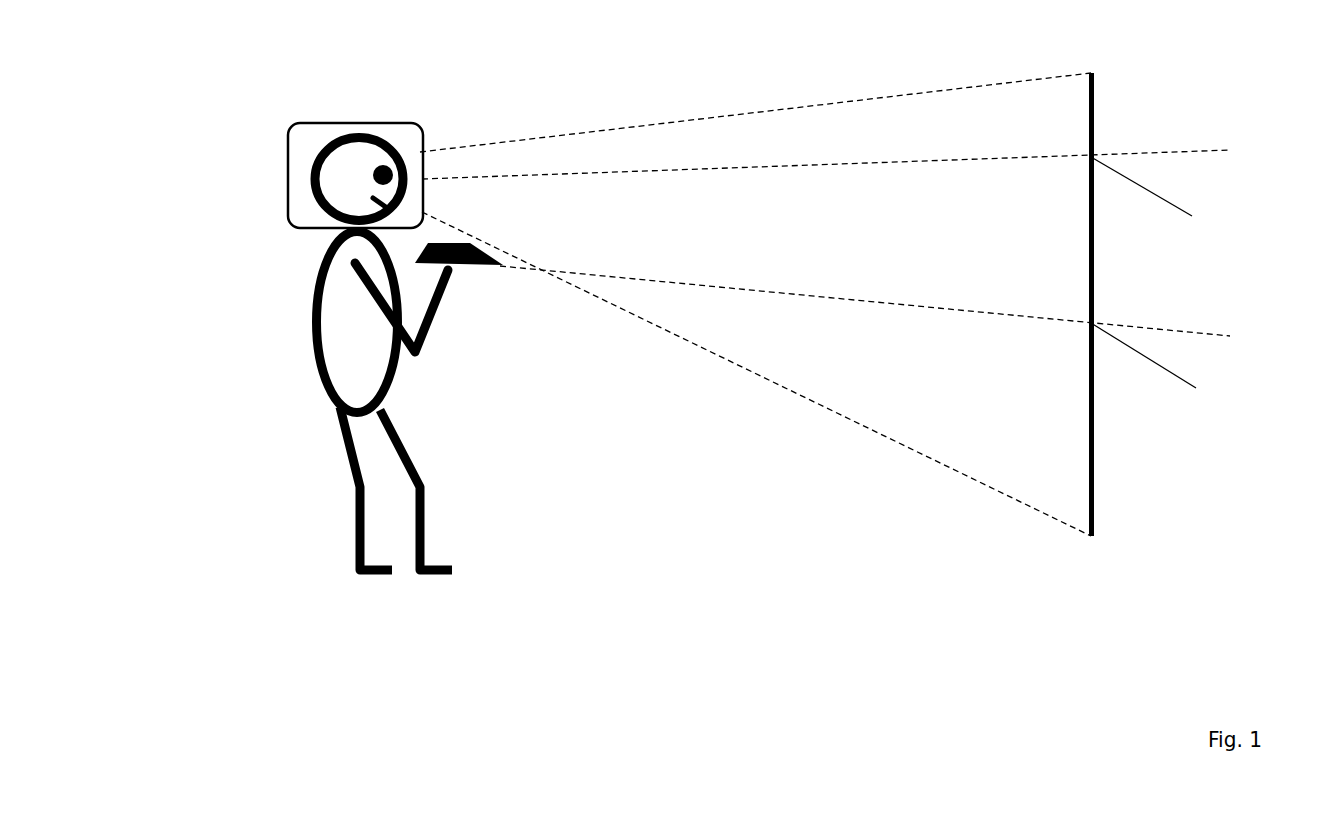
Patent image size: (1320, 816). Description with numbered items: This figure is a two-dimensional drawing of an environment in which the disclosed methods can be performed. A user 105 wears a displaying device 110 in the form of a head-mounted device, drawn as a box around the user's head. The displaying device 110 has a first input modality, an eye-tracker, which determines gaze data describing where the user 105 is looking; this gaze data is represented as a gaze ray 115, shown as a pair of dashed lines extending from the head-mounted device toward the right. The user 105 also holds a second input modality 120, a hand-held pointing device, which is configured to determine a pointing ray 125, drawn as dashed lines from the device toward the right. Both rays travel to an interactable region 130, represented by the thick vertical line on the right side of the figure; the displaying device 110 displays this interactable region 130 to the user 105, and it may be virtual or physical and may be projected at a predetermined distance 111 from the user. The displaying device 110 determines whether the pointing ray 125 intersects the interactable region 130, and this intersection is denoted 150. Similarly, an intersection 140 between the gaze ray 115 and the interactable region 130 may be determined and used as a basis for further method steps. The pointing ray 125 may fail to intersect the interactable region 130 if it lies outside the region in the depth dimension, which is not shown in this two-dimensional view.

The user 105 is at (312, 311).
The displaying device 110 is at (302, 123).
The predetermined distance 111 is at (1137, 299).
The gaze ray 115 is at (736, 166).
The second input modality 120 is at (480, 267).
The pointing ray 125 is at (773, 297).
The interactable region 130 is at (1090, 303).
The intersection between gaze ray and interactable region 140 is at (1164, 202).
The intersection between pointing ray and interactable region 150 is at (1167, 370).